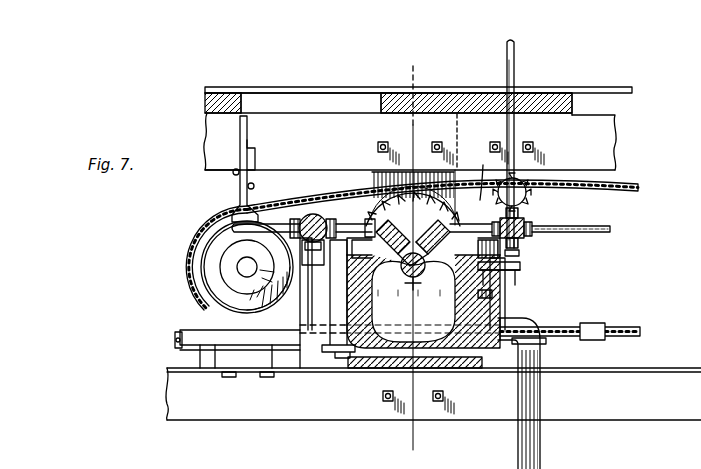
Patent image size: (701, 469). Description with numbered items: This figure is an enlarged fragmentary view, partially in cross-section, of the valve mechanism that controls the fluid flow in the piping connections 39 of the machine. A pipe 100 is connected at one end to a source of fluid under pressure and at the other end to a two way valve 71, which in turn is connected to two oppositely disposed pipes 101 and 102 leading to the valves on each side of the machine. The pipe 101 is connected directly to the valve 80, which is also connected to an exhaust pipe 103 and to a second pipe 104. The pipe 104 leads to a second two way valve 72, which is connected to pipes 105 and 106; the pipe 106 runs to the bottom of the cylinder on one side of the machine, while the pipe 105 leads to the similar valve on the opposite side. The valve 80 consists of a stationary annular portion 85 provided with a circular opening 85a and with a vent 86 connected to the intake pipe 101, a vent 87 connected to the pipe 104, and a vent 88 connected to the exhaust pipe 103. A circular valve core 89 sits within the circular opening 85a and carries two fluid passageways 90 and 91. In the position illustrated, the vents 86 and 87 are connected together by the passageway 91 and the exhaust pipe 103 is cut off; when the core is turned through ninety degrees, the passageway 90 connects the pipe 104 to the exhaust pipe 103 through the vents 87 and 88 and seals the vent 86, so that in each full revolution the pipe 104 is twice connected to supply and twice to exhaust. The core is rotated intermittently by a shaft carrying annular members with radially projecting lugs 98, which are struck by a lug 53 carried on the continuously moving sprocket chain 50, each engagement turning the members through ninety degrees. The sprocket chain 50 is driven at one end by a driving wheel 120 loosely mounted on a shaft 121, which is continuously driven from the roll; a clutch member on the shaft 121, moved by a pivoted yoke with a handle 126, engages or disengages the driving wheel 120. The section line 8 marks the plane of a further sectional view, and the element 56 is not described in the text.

The section line 8- 8 is at (413, 256).
The piping connections 39 is at (516, 80).
The sprocket chain 50 is at (585, 180).
The lug 53 is at (592, 324).
The gear 56 is at (527, 195).
The two way valve 71 is at (528, 240).
The two way valve 72 is at (308, 222).
The valve 80 is at (505, 289).
The stationary annular portion 85 is at (520, 306).
The circular opening 85a is at (521, 270).
The vent 86 is at (469, 187).
The vent 87 is at (380, 172).
The vent 88 is at (380, 299).
The circular valve core 89 is at (400, 299).
The fluid passageway 90 is at (420, 299).
The fluid passageway 91 is at (441, 299).
The lug 98 is at (366, 220).
The pipe 100 is at (516, 57).
The pipe 101 is at (460, 160).
The pipe 102 is at (585, 226).
The exhaust pipe 103 is at (518, 393).
The pipe 104 is at (326, 218).
The pipe 105 is at (208, 223).
The pipe 106 is at (247, 322).
The driving wheel 120 is at (207, 298).
The shaft 121 is at (240, 270).
The handle 126 is at (240, 123).